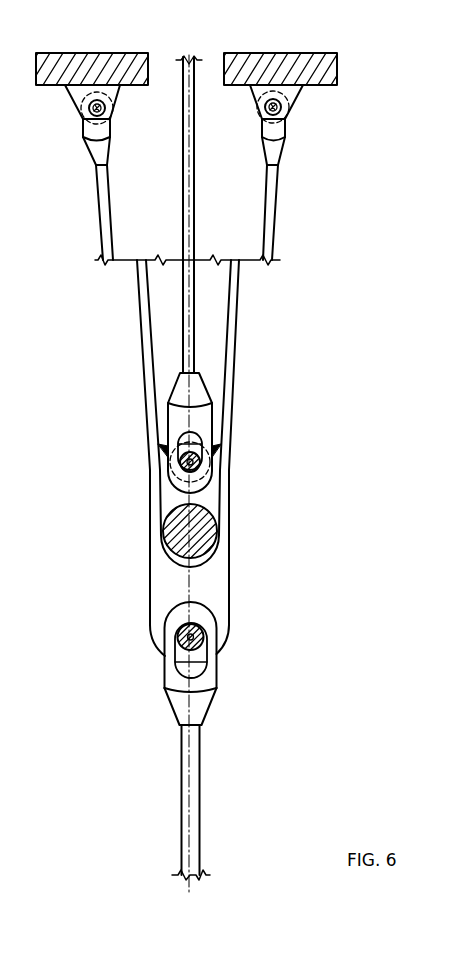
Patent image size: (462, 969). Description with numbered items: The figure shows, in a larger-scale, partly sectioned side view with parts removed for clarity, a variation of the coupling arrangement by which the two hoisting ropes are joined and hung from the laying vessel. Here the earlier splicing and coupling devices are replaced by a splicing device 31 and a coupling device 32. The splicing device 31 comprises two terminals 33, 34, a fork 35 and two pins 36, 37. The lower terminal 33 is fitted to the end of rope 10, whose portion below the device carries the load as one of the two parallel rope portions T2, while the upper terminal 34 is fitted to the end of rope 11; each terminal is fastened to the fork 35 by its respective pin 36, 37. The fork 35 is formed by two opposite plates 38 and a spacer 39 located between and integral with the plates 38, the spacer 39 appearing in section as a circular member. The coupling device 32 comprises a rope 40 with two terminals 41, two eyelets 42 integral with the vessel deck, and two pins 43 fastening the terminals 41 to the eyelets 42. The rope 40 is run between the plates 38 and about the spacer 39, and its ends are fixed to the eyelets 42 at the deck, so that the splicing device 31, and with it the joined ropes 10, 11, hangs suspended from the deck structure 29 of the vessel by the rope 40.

The rope 10 is at (198, 817).
The rope 11 is at (195, 321).
The support structure 29 is at (307, 68).
The splicing device 31 is at (262, 580).
The coupling device 32 is at (113, 348).
The terminal 33 is at (201, 706).
The terminal 34 is at (201, 433).
The fork 35 is at (243, 533).
The pin 36 is at (204, 637).
The pin 37 is at (196, 461).
The plate 38 is at (167, 585).
The spacer 39 is at (187, 538).
The rope 40 is at (273, 227).
The terminal 41 is at (98, 148).
The eyelet 42 is at (84, 101).
The pin 43 is at (100, 109).
The parallel portion T2 is at (226, 782).